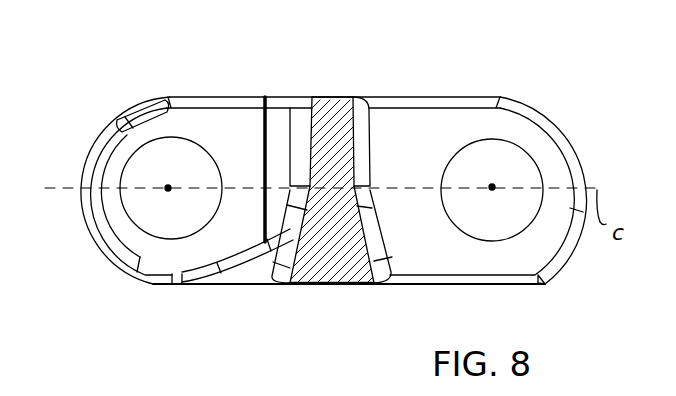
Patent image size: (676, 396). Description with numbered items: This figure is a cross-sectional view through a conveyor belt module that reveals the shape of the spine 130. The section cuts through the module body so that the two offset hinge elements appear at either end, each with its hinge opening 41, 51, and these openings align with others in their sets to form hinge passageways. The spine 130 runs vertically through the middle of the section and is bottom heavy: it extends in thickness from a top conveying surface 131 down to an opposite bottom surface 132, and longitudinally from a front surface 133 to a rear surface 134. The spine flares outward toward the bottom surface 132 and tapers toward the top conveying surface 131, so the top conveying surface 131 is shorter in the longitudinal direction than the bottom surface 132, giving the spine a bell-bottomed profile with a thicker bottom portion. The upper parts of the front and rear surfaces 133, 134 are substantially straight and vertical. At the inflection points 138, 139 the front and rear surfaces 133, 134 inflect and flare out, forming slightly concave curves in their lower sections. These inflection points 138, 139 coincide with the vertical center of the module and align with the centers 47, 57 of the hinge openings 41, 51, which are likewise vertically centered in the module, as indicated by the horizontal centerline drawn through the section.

The hinge opening 41 is at (523, 130).
The center of hinge opening 47 is at (492, 187).
The hinge opening 51 is at (130, 143).
The center of hinge opening 57 is at (168, 188).
The spine 130 is at (318, 258).
The top conveying surface 131 is at (328, 97).
The bottom surface 132 is at (330, 285).
The front surface 133 is at (373, 127).
The rear surface 134 is at (287, 127).
The inflection point 138 is at (370, 187).
The inflection point 139 is at (288, 187).